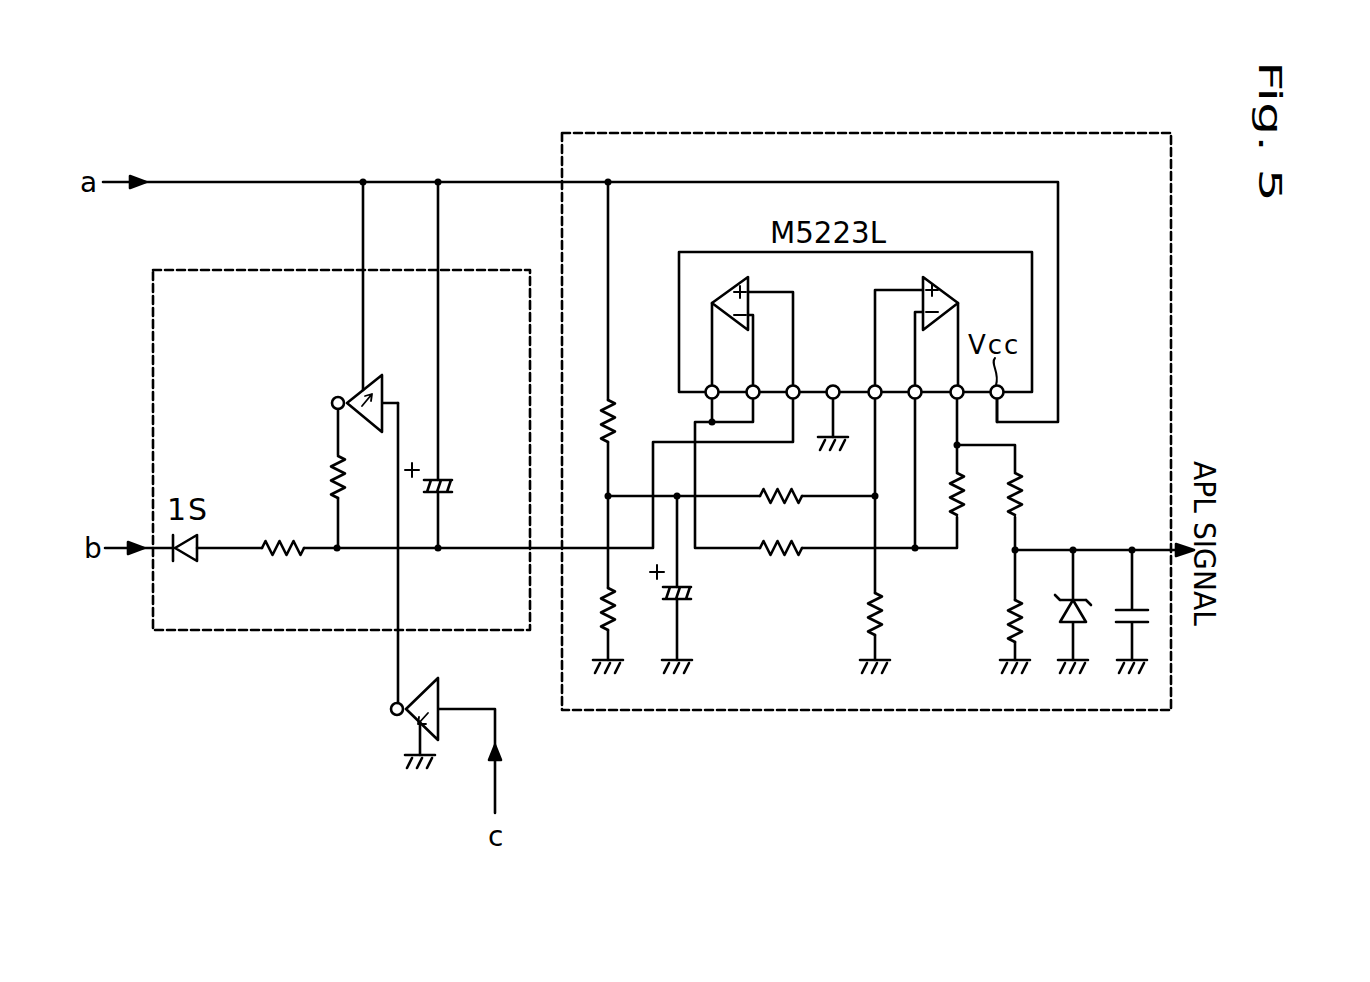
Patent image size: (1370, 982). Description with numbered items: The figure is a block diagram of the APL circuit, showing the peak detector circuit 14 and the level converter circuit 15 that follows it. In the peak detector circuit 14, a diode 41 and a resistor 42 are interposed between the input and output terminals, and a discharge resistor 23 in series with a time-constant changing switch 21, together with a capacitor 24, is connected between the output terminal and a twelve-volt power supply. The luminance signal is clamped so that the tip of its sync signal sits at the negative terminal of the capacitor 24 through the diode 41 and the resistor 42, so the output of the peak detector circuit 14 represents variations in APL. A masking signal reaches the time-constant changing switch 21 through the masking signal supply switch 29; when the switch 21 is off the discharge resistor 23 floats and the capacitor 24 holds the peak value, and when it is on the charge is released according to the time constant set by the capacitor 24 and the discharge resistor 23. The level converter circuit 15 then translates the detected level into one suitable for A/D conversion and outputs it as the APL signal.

The peak detector circuit 14 is at (176, 270).
The level converter circuit 15 is at (808, 133).
The time-constant changing switch 21 is at (332, 398).
The discharge resistor 23 is at (322, 488).
The capacitor 24 is at (440, 478).
The masking signal supply switch 29 is at (392, 716).
The diode 41 is at (182, 566).
The resistor 42 is at (282, 566).